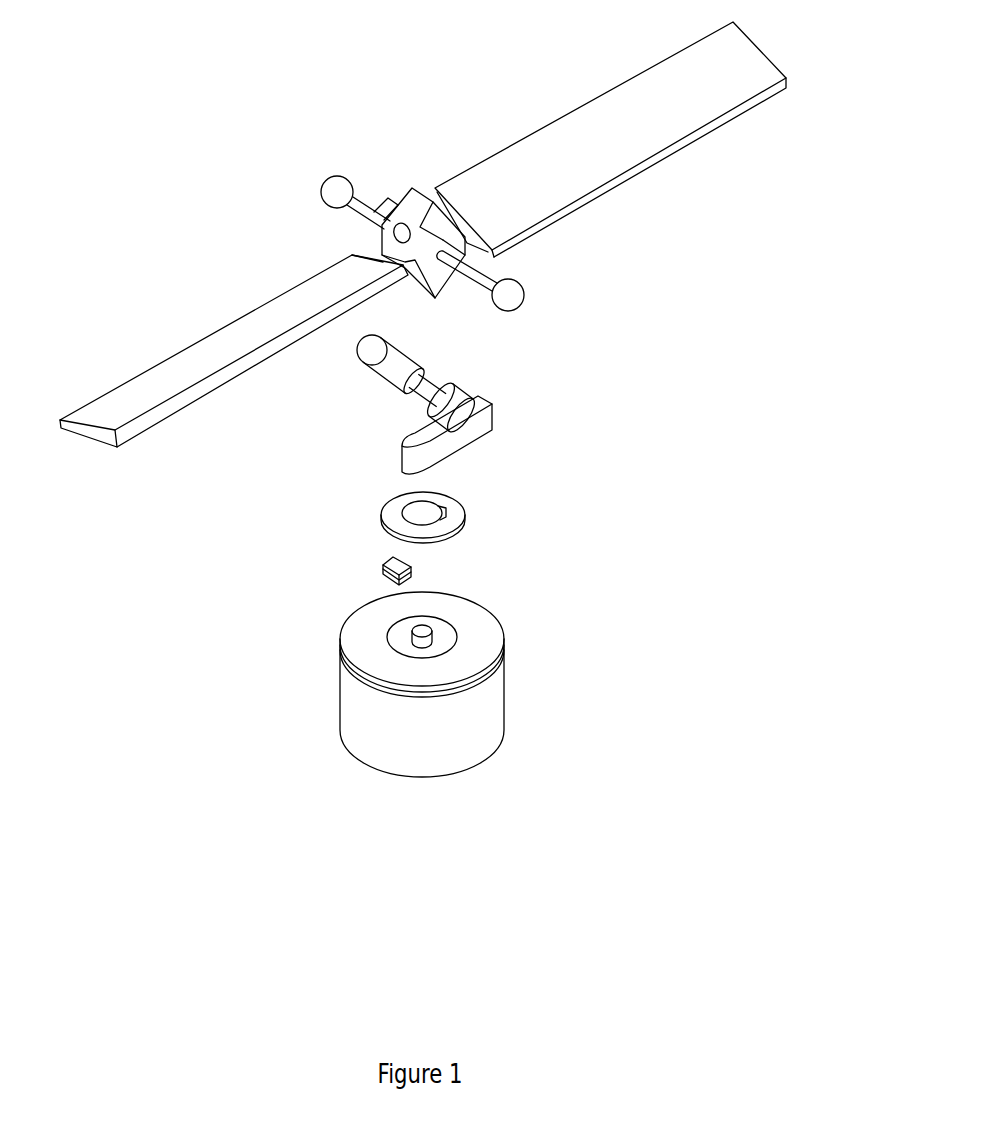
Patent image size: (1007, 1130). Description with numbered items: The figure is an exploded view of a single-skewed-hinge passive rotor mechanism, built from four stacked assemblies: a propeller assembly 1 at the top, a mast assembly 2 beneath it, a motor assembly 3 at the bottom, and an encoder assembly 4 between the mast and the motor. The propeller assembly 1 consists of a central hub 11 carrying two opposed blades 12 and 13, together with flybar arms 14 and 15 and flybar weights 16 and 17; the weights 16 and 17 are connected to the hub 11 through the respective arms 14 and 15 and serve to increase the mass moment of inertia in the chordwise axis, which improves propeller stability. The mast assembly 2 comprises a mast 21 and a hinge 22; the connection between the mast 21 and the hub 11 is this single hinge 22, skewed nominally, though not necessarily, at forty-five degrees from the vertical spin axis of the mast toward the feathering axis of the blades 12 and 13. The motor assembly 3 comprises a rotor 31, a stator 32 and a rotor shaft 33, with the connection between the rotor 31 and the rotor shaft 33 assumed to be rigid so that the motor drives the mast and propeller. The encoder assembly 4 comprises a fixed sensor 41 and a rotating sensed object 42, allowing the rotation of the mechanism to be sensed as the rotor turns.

The propeller assembly 1 is at (423, 234).
The hub 11 is at (378, 239).
The blade 12 is at (277, 296).
The blade 13 is at (567, 211).
The flybar arm 14 is at (485, 275).
The flybar arm 15 is at (372, 203).
The flybar weight 16 is at (530, 298).
The flybar weight 17 is at (317, 188).
The mast assembly 2 is at (514, 405).
The mast 21 is at (447, 472).
The hinge 22 is at (432, 374).
The motor assembly 3 is at (482, 637).
The rotor 31 is at (507, 705).
The stator 32 is at (506, 627).
The rotor shaft 33 is at (436, 630).
The encoder assembly 4 is at (322, 554).
The fixed sensor 41 is at (381, 573).
The rotating sensed object 42 is at (381, 518).